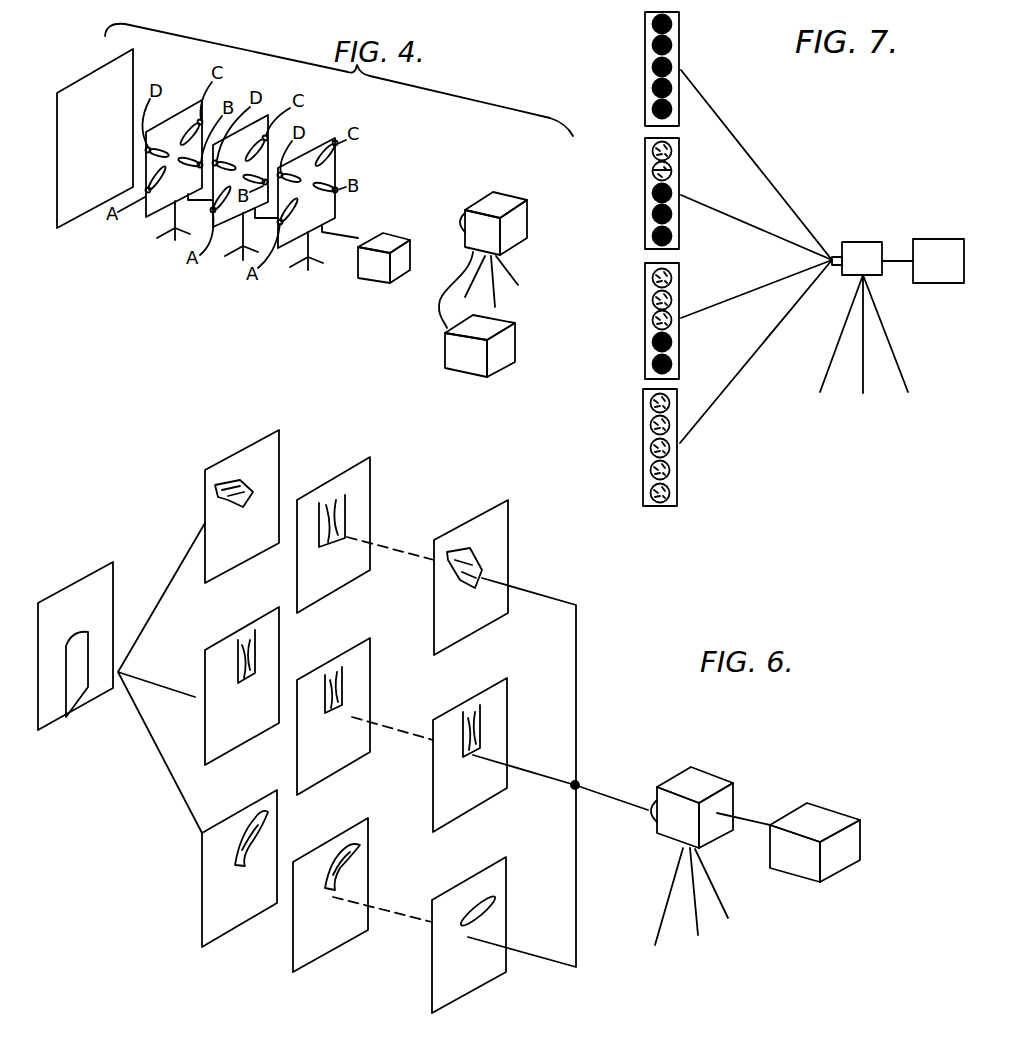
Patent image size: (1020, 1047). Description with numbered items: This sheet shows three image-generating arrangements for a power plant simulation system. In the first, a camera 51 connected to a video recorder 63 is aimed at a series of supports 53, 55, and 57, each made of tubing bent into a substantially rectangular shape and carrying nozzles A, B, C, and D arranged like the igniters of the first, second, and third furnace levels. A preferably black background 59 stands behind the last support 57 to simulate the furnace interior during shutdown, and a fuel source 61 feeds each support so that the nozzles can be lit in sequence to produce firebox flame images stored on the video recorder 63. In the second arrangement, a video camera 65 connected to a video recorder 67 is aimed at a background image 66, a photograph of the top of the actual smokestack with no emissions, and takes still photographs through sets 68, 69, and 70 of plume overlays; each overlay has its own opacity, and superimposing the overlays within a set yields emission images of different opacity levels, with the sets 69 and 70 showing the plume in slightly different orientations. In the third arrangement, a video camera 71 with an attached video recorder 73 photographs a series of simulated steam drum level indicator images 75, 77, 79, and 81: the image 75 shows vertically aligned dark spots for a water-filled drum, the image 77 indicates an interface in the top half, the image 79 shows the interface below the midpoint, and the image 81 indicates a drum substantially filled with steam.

In FIG. 4, the camera 51 is at (513, 233).
In FIG. 4, the support 53 is at (280, 238).
In FIG. 4, the tubular support 55 is at (220, 222).
In FIG. 4, the support 57 is at (148, 213).
In FIG. 4, the background 59 is at (67, 218).
In FIG. 4, the fuel source 61 is at (392, 292).
In FIG. 4, the video recorder 63 is at (497, 355).
In FIG. 6, the video camera 65 is at (717, 777).
In FIG. 6, the background image 66 is at (53, 722).
In FIG. 6, the video recorder 67 is at (833, 808).
In FIG. 6, the set of overlays 68 is at (508, 555).
In FIG. 6, the set of overlays 69 is at (508, 710).
In FIG. 6, the set of overlays 70 is at (506, 882).
In FIG. 7, the video camera 71 is at (868, 243).
In FIG. 7, the video recorder 73 is at (946, 239).
In FIG. 7, the simulated image 75 is at (681, 42).
In FIG. 7, the simulated steam level image 77 is at (680, 163).
In FIG. 7, the simulated water/steam level image 79 is at (680, 285).
In FIG. 7, the simulated water/steam level image 81 is at (680, 400).